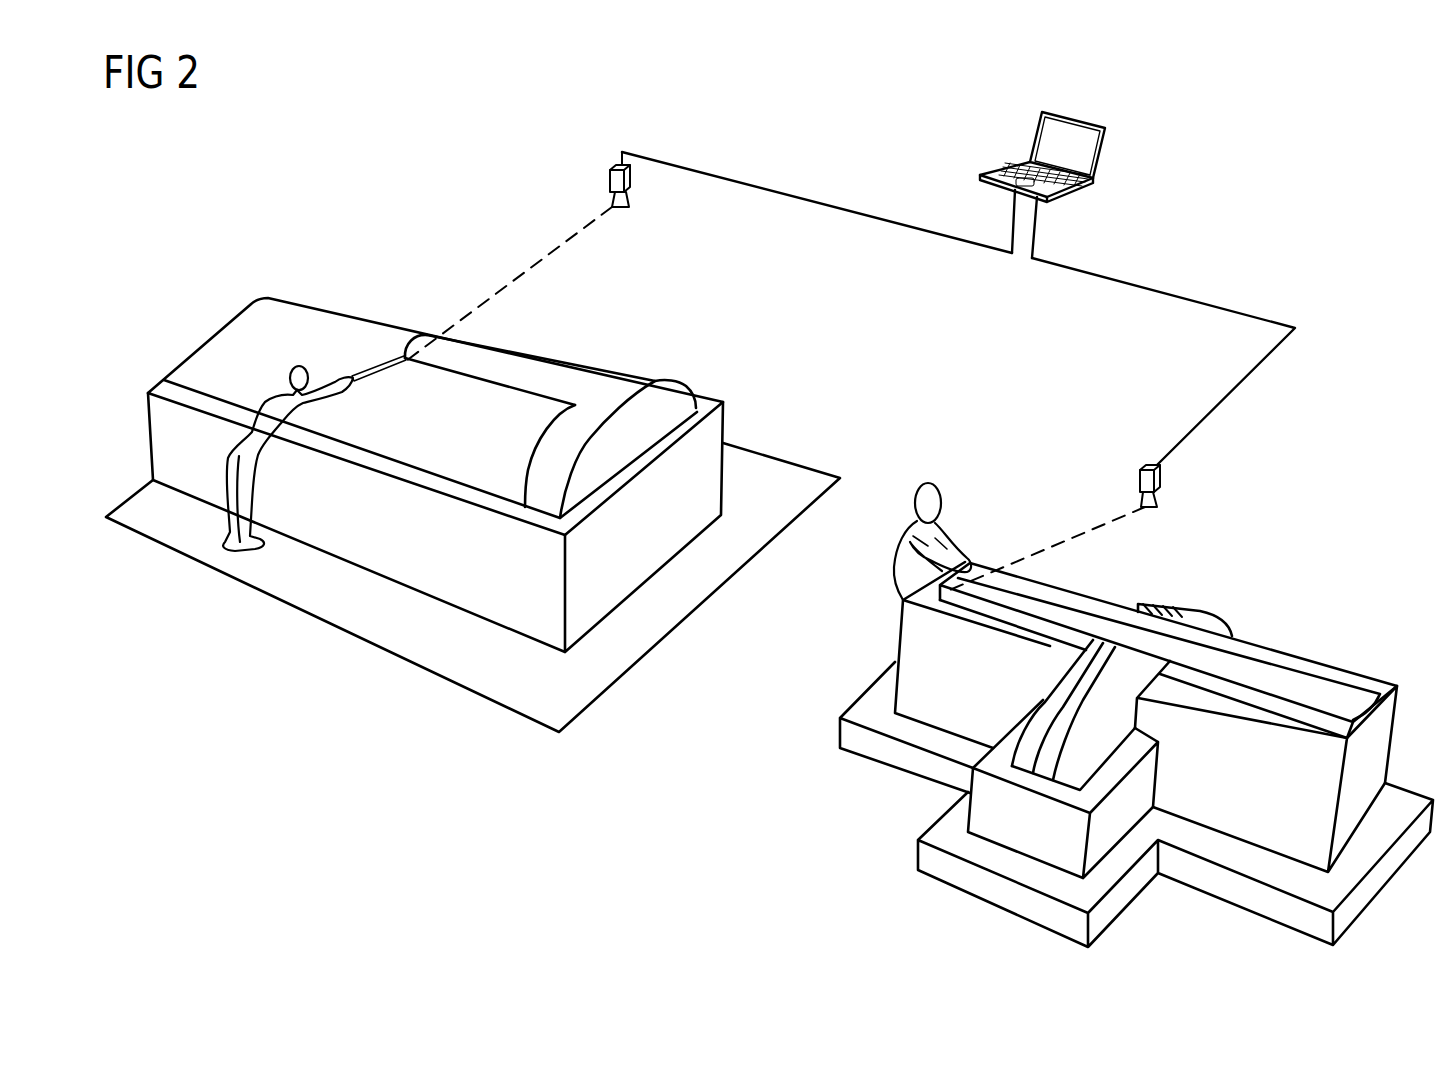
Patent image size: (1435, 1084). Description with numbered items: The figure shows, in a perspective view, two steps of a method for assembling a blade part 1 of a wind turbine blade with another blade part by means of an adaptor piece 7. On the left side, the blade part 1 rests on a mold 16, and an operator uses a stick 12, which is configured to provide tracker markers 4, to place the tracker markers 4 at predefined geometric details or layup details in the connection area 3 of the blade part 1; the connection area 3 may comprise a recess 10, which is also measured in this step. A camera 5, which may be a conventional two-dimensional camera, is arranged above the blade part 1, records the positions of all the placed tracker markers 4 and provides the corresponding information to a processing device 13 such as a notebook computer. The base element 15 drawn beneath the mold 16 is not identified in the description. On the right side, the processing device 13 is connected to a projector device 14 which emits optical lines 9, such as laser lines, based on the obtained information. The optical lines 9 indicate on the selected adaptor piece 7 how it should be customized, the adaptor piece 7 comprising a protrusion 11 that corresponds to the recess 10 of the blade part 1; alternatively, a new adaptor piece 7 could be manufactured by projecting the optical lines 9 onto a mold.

The blade part 1 is at (301, 320).
The connection area 3 is at (694, 378).
The tracker markers 4 is at (430, 333).
The camera 5 is at (608, 179).
The adaptor piece 7 is at (1306, 670).
The optical lines 9 is at (1052, 547).
The recess 10 is at (505, 372).
The protrusion 11 is at (1136, 757).
The stick 12 is at (377, 368).
The processing device 13 is at (1106, 150).
The projector device 14 is at (1163, 480).
The floor platform 15 is at (324, 541).
The mold 16 is at (1256, 826).